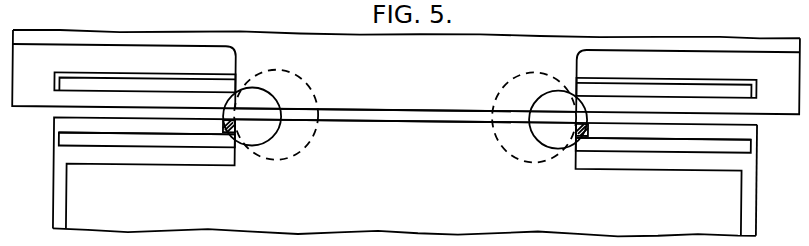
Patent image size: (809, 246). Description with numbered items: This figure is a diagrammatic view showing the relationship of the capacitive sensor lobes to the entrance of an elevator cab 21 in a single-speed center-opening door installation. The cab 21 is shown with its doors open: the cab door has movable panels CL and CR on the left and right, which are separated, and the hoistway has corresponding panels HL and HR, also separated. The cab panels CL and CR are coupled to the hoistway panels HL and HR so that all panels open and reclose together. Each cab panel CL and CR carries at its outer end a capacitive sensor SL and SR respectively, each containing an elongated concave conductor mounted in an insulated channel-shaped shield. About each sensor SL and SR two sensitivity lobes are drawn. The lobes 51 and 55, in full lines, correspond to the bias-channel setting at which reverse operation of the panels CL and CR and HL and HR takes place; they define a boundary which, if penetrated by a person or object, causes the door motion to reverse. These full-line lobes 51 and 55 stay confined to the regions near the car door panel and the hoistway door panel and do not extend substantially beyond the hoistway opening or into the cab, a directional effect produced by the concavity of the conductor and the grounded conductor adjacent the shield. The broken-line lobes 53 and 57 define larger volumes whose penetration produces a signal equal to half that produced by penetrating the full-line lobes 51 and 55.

The cab 21 is at (414, 198).
The right hoistway panel HR is at (142, 85).
The left hoistway panel HL is at (676, 83).
The right cab panel CR is at (62, 134).
The left cab panel CL is at (747, 143).
The right capacitive sensor SR is at (222, 131).
The left capacitive sensor SL is at (592, 132).
The full-line sensitivity lobe 51 is at (276, 114).
The broken-line sensitivity lobe 53 is at (318, 104).
The full-line sensitivity lobe 55 is at (533, 128).
The broken-line sensitivity lobe 57 is at (500, 102).